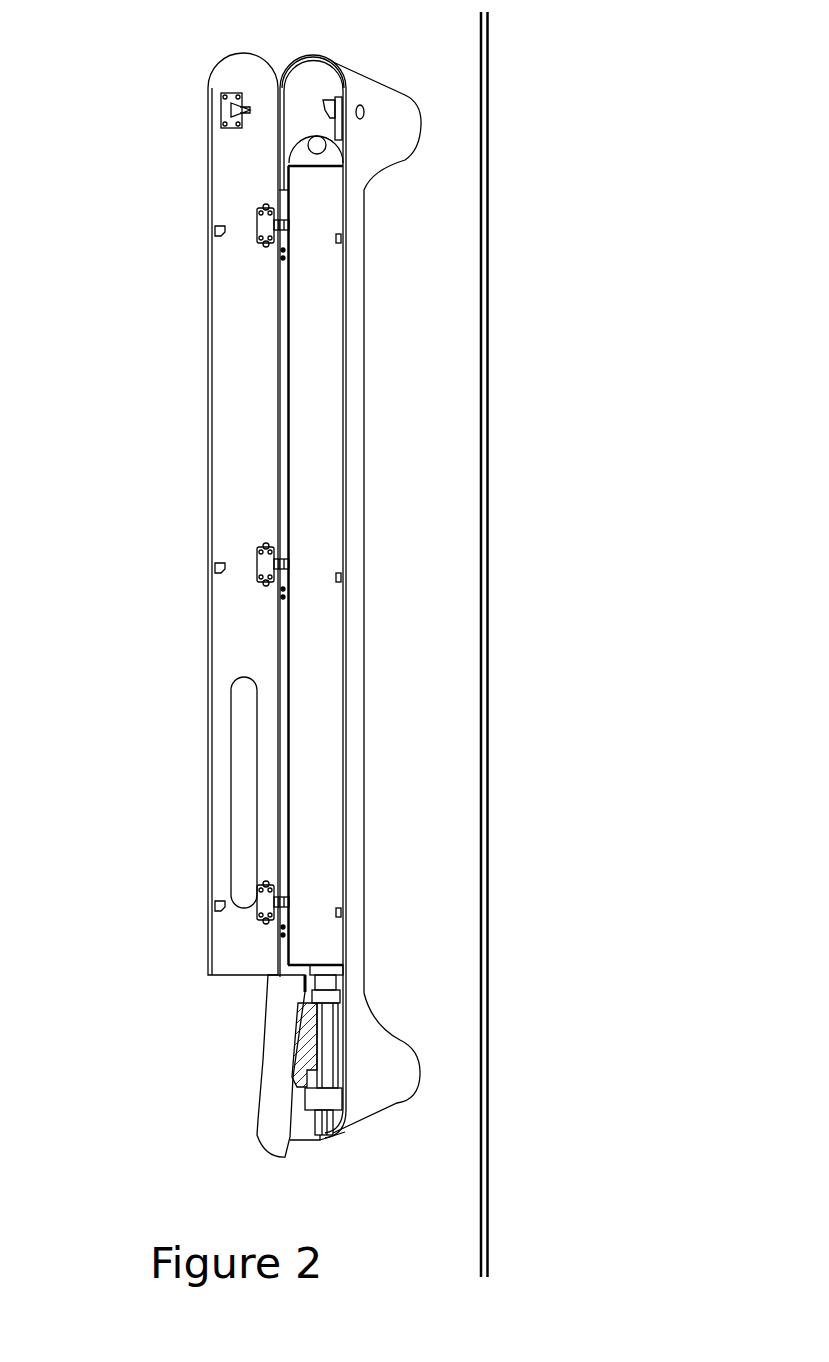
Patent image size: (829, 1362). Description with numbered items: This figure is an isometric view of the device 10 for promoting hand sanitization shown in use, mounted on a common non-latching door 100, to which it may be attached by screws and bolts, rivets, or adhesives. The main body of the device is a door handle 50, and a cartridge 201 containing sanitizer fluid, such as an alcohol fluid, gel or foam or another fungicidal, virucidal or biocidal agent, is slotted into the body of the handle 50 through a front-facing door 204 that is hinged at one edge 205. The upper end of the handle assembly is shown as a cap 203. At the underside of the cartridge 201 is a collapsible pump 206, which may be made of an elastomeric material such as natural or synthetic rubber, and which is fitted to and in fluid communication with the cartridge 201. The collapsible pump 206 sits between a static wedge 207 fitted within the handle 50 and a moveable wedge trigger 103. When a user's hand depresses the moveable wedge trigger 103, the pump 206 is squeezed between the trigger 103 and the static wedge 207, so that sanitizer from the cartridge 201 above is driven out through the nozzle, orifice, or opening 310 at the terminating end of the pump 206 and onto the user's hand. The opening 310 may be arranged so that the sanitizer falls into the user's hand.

The device 10 is at (121, 285).
The door handle 50 is at (385, 133).
The door 100 is at (452, 258).
The moveable wedge trigger 103 is at (303, 1057).
The cartridge 201 is at (333, 440).
The cap 203 is at (315, 82).
The front-facing door 204 is at (230, 180).
The hinged edge 205 is at (272, 250).
The collapsible pump 206 is at (327, 1020).
The static wedge 207 is at (337, 1078).
The nozzle, orifice, or opening 310 is at (343, 1133).